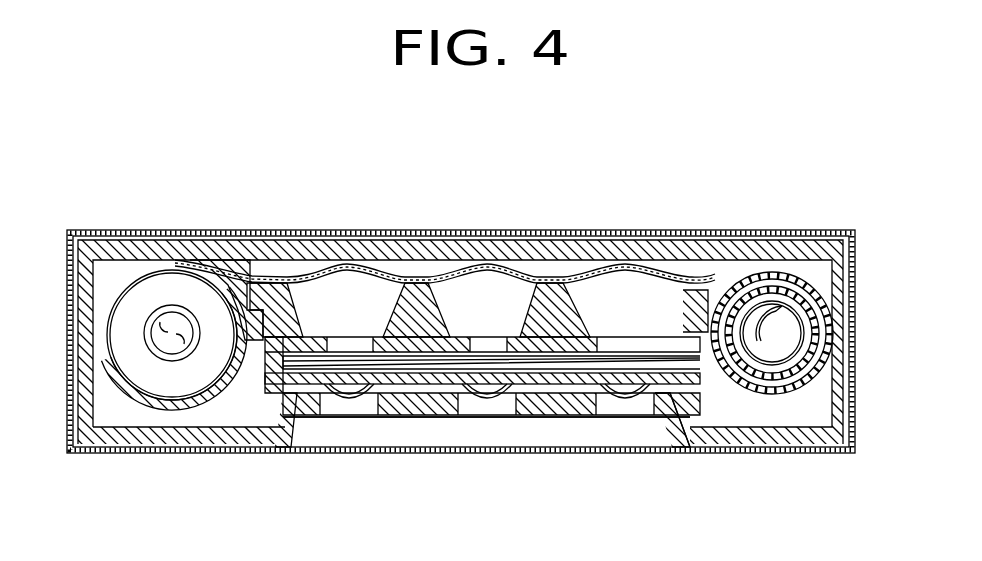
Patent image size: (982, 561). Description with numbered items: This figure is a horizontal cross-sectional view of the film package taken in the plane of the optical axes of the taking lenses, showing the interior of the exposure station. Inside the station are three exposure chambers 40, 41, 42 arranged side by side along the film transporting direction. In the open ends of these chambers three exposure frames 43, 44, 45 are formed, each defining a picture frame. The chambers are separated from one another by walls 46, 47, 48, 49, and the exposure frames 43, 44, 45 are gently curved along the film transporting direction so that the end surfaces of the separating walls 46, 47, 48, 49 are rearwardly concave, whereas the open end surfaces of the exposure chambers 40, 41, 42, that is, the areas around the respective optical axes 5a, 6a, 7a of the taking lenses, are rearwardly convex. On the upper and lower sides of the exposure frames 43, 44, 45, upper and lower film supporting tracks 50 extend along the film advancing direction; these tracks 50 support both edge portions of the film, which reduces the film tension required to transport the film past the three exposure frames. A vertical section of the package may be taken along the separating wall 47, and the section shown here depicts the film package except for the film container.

The exposure chamber 40 is at (386, 352).
The exposure chamber 41 is at (523, 370).
The exposure chamber 42 is at (657, 400).
The exposure frame 43 is at (323, 265).
The exposure frame 44 is at (470, 268).
The exposure frame 45 is at (605, 266).
The wall 46 is at (251, 262).
The separating wall 47 is at (413, 268).
The wall 48 is at (547, 268).
The wall 49 is at (692, 270).
The film supporting tracks 50 is at (648, 262).
The optical axis 5a is at (349, 262).
The optical axis 6a is at (487, 262).
The optical axis 7a is at (625, 262).